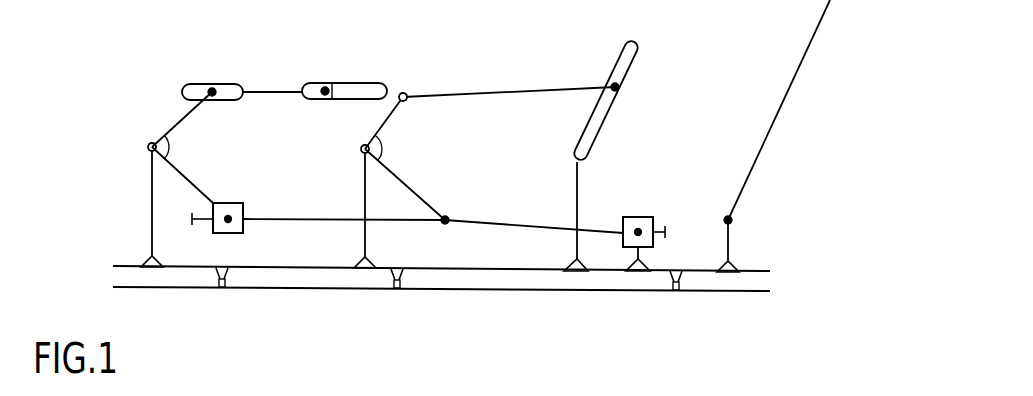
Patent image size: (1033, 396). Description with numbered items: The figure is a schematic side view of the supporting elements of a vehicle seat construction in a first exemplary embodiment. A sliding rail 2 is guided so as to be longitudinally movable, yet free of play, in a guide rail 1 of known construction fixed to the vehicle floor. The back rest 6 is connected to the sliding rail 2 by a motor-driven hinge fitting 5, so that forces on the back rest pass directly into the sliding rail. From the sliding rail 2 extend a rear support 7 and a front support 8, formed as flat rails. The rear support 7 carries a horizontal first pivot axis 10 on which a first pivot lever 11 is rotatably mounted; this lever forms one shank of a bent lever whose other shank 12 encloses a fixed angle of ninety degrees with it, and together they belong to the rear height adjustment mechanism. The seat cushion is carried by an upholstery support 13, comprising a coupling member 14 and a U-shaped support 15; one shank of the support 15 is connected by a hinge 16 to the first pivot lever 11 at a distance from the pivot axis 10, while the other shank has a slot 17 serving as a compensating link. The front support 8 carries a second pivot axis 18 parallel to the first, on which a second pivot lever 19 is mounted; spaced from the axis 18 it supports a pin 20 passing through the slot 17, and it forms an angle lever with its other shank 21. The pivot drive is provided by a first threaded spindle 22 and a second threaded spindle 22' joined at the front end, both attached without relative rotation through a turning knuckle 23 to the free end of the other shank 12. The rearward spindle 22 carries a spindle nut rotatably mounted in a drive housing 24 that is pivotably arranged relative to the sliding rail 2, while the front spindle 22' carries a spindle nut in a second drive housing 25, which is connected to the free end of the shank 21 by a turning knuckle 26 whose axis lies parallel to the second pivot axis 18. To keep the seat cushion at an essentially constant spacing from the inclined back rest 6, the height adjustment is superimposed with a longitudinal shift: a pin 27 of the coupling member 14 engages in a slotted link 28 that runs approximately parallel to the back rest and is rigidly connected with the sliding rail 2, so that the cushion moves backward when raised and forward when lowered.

The guide rail 1 is at (441, 307).
The sliding rail 2 is at (518, 271).
The hinge fitting 5 is at (733, 222).
The back rest 6 is at (781, 104).
The rear support 7 is at (363, 259).
The front support 8 is at (150, 215).
The first pivot axis 10 is at (361, 150).
The first pivot lever 11 is at (395, 121).
The other shank 12 is at (415, 188).
The upholstery support 13 is at (289, 62).
The coupling member 14 is at (563, 86).
The U-shaped support 15 is at (277, 88).
The hinge 16 is at (403, 92).
The slot 17 is at (228, 101).
The second pivot axis 18 is at (148, 150).
The second pivot lever 19 is at (187, 112).
The pin 20 is at (210, 88).
The other shank 21 is at (193, 178).
The first threaded spindle 22 is at (534, 203).
The second threaded spindle 22' is at (344, 237).
The turning knuckle 23 is at (447, 226).
The drive housing 24 is at (634, 216).
The second drive housing 25 is at (241, 234).
The turning knuckle 26 is at (215, 226).
The pin 27 is at (621, 88).
The slotted link 28 is at (629, 59).